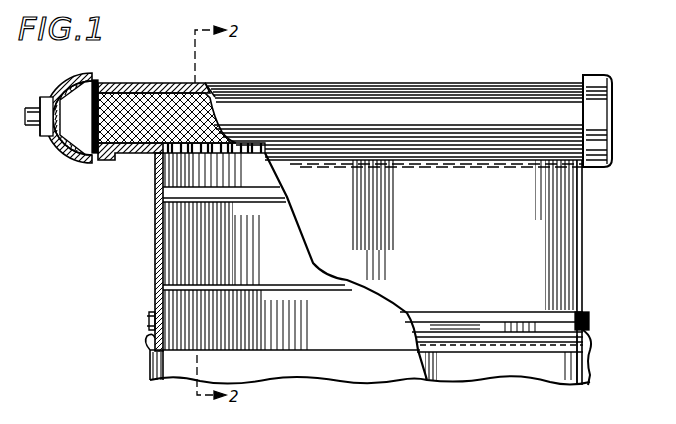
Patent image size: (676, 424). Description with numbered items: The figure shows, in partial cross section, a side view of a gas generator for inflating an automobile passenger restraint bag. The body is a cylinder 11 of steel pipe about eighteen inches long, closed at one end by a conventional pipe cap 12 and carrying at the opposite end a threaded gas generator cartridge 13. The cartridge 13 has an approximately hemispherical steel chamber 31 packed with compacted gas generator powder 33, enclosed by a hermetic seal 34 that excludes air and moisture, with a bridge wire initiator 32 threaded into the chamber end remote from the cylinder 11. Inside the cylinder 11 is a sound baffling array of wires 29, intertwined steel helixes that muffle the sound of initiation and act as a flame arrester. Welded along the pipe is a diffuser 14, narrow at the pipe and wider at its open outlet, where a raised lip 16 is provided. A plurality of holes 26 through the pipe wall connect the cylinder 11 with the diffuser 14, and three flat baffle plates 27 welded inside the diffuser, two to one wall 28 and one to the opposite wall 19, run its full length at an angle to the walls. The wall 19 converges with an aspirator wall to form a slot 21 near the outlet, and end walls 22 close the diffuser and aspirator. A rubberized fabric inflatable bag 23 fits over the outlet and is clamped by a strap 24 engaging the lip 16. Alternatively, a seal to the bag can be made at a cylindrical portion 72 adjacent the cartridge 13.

The cylinder 11 is at (433, 83).
The pipe cap 12 is at (612, 116).
The gas generator cartridge 13 is at (112, 64).
The diffuser 14 is at (588, 250).
The raised lip 16 is at (158, 380).
The wall 19 is at (570, 208).
The slot 21 is at (545, 322).
The end walls 22 is at (155, 254).
The inflatable bag 23 is at (588, 385).
The strap 24 is at (147, 324).
The holes 26 is at (228, 153).
The baffle plates 27 is at (250, 280).
The wall 28 is at (178, 236).
The array of wires 29 is at (212, 93).
The steel chamber 31 is at (92, 163).
The bridge wire initiator 32 is at (44, 136).
The gas generator powder 33 is at (72, 84).
The hermetic seal 34 is at (99, 80).
The cylindrical portion 72 is at (132, 160).